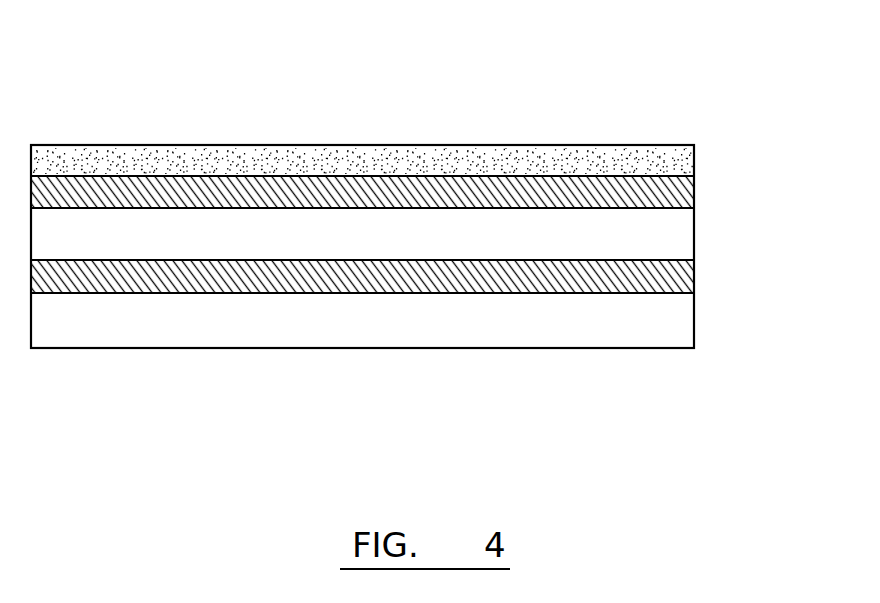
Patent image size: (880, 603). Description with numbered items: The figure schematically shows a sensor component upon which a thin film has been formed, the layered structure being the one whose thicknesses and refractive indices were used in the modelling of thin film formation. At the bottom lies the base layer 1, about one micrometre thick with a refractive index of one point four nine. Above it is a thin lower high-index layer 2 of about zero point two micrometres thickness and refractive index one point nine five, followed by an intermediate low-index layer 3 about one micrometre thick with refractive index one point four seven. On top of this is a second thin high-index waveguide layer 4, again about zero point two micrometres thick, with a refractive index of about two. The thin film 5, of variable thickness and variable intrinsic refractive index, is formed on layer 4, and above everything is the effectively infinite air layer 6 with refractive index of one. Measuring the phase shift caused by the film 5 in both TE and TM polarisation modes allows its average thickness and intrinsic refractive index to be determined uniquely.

The air layer 6 is at (335, 80).
The thin film 5 is at (698, 164).
The high-index waveguide layer 4 is at (698, 198).
The intermediate low-index layer 3 is at (698, 240).
The lower high-index layer 2 is at (698, 280).
The base layer 1 is at (698, 329).